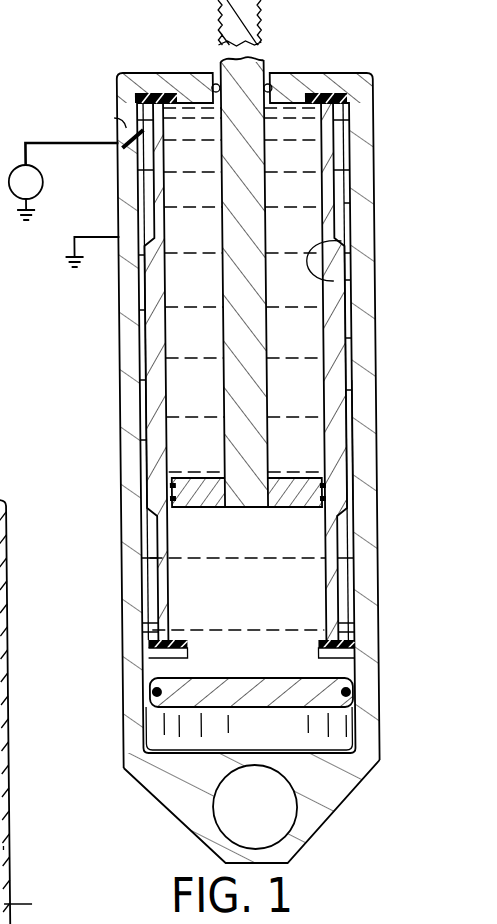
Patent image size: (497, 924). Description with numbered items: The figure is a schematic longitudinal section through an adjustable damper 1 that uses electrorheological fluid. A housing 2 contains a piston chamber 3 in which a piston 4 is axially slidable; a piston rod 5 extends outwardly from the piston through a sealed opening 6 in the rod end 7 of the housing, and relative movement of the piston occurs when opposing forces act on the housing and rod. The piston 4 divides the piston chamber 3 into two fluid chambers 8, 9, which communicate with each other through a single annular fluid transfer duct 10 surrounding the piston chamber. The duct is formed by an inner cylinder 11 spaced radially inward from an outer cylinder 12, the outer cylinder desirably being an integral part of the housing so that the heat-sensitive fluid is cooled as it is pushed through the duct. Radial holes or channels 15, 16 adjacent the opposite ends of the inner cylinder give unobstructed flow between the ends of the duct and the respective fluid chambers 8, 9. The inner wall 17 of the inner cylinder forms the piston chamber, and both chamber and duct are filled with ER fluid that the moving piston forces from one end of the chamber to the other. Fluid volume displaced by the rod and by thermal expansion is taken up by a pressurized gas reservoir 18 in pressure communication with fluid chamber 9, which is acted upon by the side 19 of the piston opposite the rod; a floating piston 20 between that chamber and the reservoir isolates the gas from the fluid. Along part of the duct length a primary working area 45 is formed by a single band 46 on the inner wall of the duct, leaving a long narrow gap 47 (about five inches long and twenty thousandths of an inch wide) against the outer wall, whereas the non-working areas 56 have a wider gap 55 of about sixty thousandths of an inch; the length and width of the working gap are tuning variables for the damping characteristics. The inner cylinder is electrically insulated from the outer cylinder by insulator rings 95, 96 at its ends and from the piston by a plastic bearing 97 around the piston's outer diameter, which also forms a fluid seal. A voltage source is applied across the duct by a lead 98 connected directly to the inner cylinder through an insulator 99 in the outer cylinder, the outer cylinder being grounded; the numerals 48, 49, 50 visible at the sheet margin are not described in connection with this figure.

The adjustable damper 1 is at (127, 55).
The housing 2 is at (127, 407).
The piston chamber 3 is at (183, 388).
The piston 4 is at (175, 494).
The piston rod 5 is at (217, 60).
The sealed opening 6 is at (266, 60).
The rod end 7 is at (345, 72).
The fluid chamber 8 is at (172, 316).
The fluid chamber 9 is at (165, 602).
The fluid transfer duct 10 is at (143, 462).
The inner cylinder 11 is at (330, 217).
The outer cylinder 12 is at (363, 332).
The radial hole or channel 15 is at (373, 152).
The radial hole or channel 16 is at (348, 641).
The inner wall 17 is at (332, 281).
The pressurized gas reservoir 18 is at (167, 724).
The side of the piston 19 is at (292, 507).
The floating piston 20 is at (333, 732).
The primary working area 45 is at (357, 441).
The band 46 is at (352, 390).
The narrow gap 47 is at (352, 338).
The electrode 48 is at (0, 848).
The insulating sleeve 49 is at (8, 797).
The conductor 50 is at (24, 904).
The gap 55 is at (343, 156).
The non-working area 56 is at (348, 193).
The insulator ring 95 is at (156, 96).
The insulator ring 96 is at (153, 655).
The plastic bearing 97 is at (353, 484).
The lead 98 is at (57, 143).
The insulator 99 is at (122, 115).